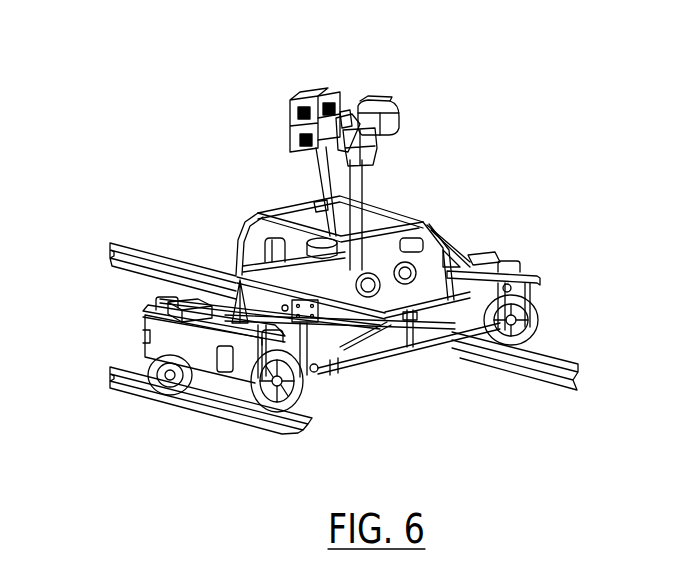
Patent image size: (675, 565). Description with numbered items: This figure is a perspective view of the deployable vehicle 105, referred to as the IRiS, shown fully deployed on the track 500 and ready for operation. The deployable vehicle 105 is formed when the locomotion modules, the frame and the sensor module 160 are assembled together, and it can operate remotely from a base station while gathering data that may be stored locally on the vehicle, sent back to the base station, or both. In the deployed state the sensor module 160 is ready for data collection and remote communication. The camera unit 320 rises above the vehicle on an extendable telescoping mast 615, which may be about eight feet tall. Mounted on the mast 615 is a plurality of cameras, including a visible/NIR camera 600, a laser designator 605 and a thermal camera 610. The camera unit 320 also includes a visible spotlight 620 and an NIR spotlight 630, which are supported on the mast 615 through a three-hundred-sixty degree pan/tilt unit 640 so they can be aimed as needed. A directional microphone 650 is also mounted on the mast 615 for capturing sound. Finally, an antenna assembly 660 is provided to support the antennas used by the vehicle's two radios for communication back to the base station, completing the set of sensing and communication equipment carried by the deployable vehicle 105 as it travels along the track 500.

The deployable vehicle 105 is at (118, 296).
The sensor module 160 is at (228, 211).
The camera unit 320 is at (350, 140).
The track 500 is at (558, 363).
The visible/NIR camera 600 is at (409, 105).
The laser designator 605 is at (395, 118).
The thermal camera 610 is at (398, 125).
The extendable telescoping mast 615 is at (357, 187).
The visible spotlight 620 is at (333, 128).
The NIR spotlight 630 is at (338, 130).
The 360 degree pan/tilt unit 640 is at (376, 152).
The directional microphone 650 is at (353, 104).
The antenna assembly 660 is at (287, 93).